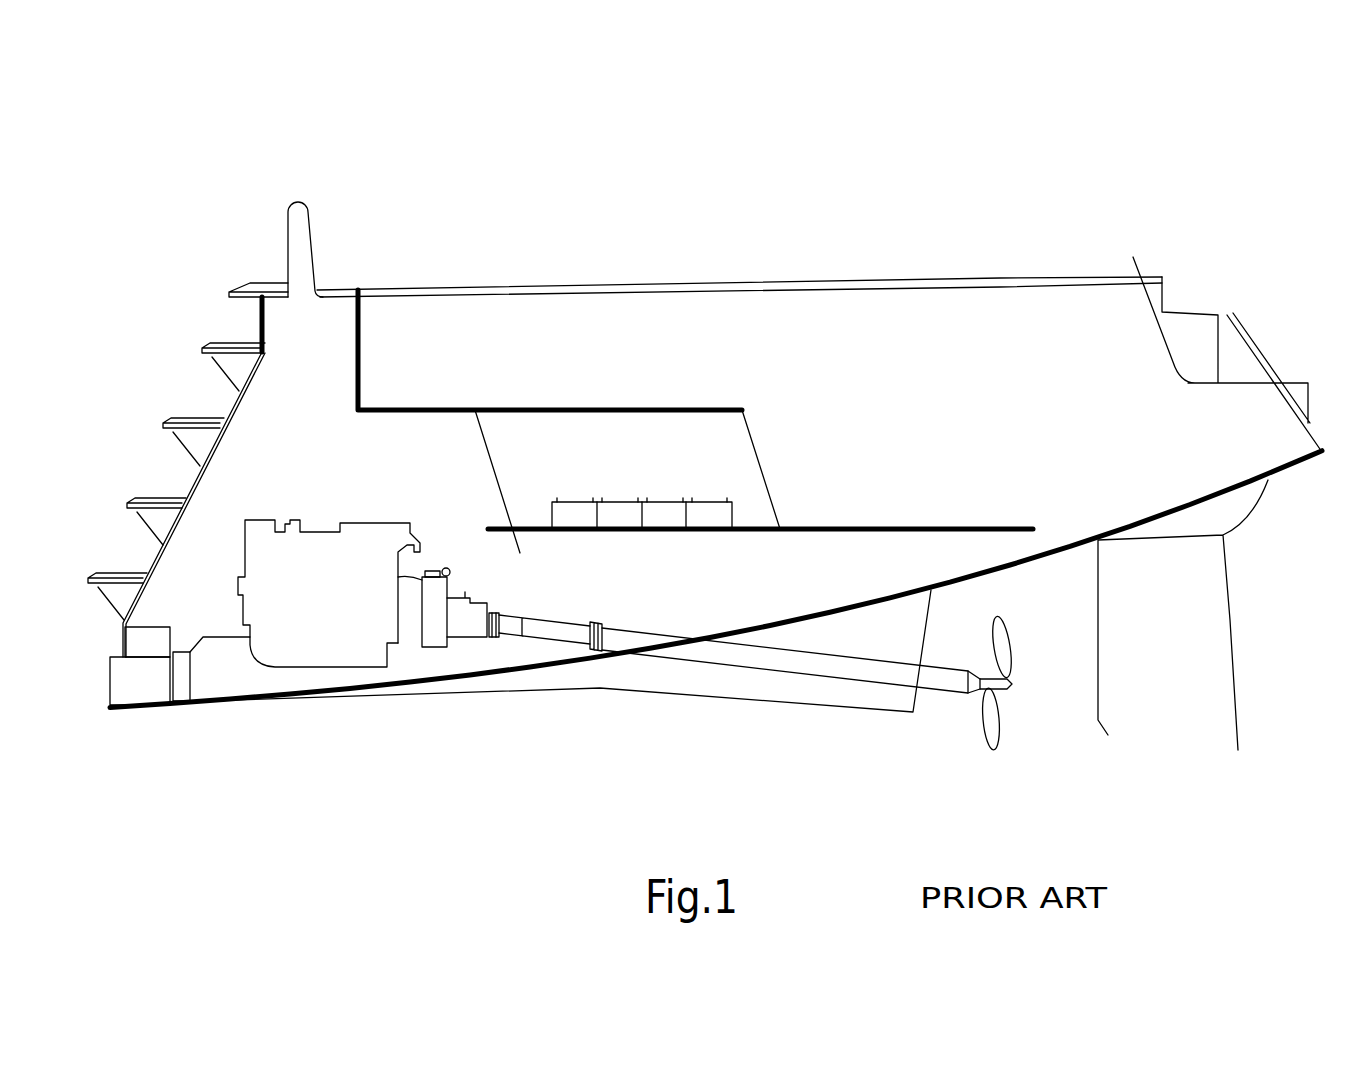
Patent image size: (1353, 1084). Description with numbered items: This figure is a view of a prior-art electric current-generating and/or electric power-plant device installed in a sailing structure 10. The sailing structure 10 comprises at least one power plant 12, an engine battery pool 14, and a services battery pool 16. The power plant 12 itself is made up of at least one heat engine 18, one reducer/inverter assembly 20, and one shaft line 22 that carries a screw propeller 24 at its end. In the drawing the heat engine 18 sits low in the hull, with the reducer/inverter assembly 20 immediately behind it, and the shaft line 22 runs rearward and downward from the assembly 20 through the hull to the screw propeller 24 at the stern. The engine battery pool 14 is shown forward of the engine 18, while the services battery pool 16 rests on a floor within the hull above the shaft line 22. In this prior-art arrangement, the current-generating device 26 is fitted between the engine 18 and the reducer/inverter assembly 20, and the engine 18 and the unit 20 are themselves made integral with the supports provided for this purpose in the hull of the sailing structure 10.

The sailing structure 10 is at (1010, 263).
The power plant 12 is at (292, 650).
The engine battery pool 14 is at (145, 647).
The services battery pool 16 is at (710, 512).
The heat engine 18 is at (347, 652).
The reducer/inverter assembly 20 is at (477, 610).
The shaft line 22 is at (725, 652).
The screw propeller 24 is at (990, 725).
The current-generating device 26 is at (435, 637).